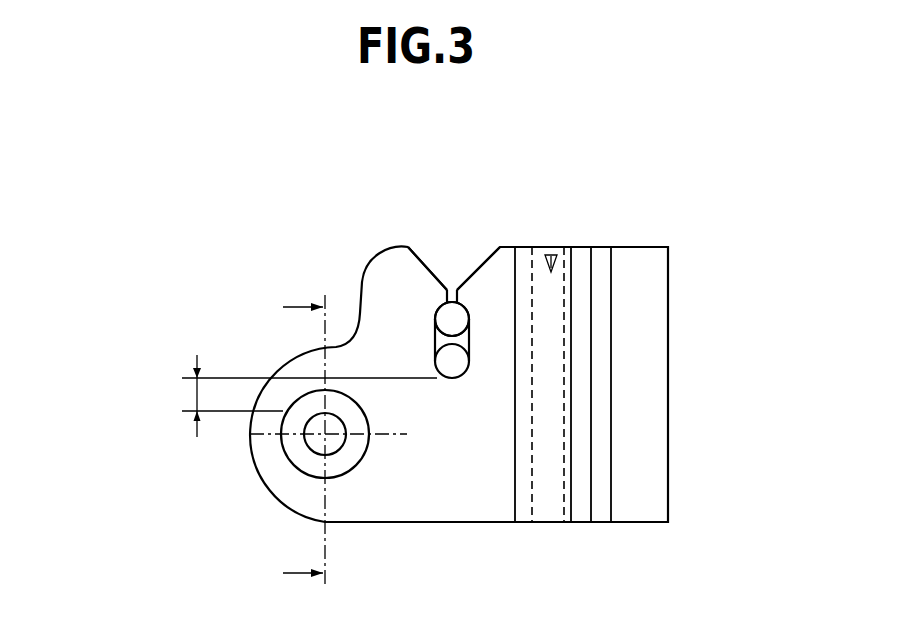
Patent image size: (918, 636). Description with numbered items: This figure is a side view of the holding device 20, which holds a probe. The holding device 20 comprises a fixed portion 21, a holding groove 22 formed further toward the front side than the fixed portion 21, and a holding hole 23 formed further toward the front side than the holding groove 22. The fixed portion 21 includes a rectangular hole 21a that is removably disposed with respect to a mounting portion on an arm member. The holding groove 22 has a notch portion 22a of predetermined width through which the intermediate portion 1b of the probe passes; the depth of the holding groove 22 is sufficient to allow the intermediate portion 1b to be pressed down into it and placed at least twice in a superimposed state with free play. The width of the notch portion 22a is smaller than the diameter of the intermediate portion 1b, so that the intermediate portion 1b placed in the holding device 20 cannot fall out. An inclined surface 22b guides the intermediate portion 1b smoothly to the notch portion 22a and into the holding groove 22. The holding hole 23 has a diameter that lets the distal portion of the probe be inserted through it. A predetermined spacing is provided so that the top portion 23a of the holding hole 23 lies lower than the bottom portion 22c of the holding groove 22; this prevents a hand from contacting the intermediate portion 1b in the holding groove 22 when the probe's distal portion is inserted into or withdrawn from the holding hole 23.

The holding device 20 is at (350, 198).
The fixed portion 21 is at (600, 255).
The rectangular hole 21a is at (555, 250).
The holding groove 22 is at (438, 340).
The notch portion 22a is at (452, 288).
The inclined surface 22b is at (418, 252).
The bottom portion 22c is at (452, 370).
The holding hole 23 is at (311, 450).
The top portion 23a is at (325, 418).
The intermediate portion 1b is at (462, 358).